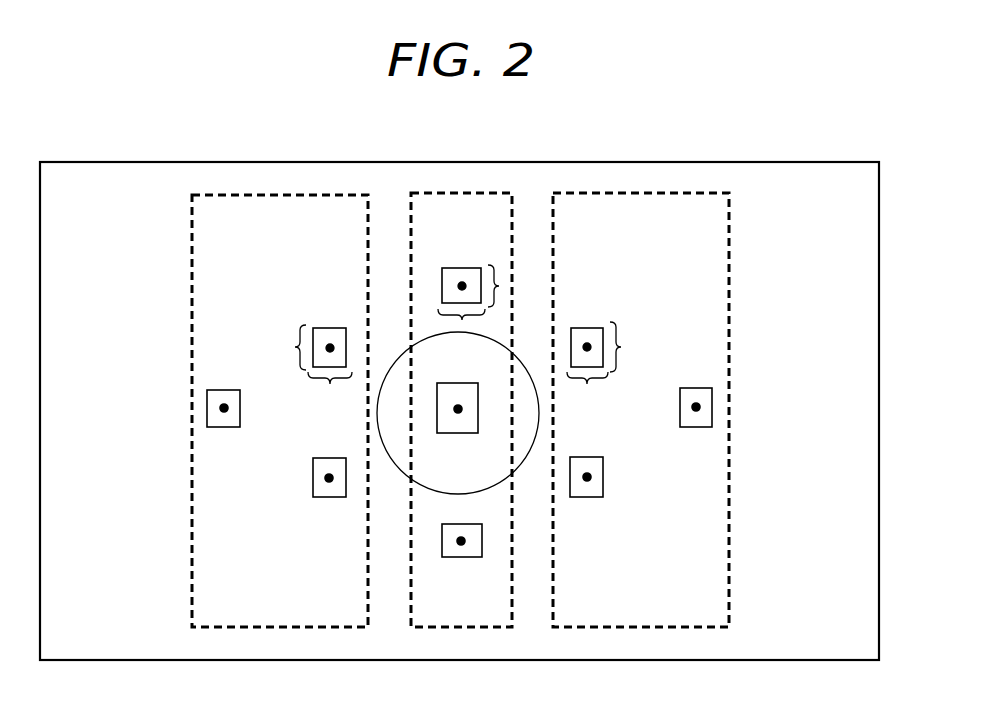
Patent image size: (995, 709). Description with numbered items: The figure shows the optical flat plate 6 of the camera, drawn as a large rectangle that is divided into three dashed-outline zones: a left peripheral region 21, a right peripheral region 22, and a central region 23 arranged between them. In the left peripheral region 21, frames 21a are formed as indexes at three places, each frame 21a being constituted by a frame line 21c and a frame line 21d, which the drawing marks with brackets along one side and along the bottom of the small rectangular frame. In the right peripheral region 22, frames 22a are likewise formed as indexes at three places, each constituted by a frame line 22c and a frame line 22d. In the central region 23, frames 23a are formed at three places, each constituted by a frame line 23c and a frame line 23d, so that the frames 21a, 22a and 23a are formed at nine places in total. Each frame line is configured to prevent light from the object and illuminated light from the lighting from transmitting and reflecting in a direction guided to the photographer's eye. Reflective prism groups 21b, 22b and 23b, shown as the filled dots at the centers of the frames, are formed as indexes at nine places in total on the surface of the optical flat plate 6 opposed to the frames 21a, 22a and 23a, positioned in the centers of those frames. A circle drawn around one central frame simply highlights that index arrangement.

The optical flat plate 6 is at (91, 162).
The left peripheral region 21 is at (283, 195).
The right peripheral region 22 is at (647, 193).
The central region 23 is at (467, 193).
The frame 21a is at (330, 344).
The reflective prism group 21b is at (327, 345).
The frame line 21c is at (295, 347).
The frame line 21d is at (330, 384).
The frame 22a is at (586, 344).
The reflective prism group 22b is at (590, 345).
The frame line 22c is at (621, 347).
The frame line 22d is at (587, 384).
The frame 23a is at (461, 282).
The reflective prism group 23b is at (465, 282).
The frame line 23c is at (499, 286).
The frame line 23d is at (462, 320).